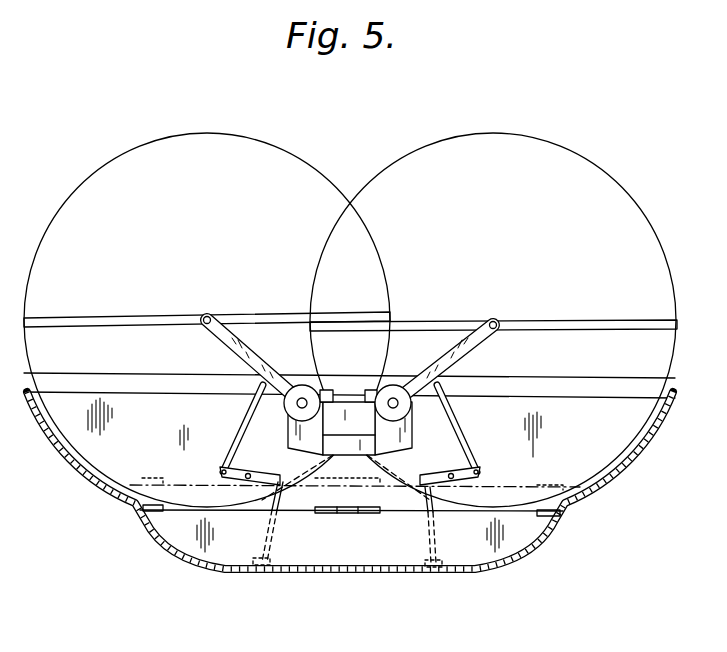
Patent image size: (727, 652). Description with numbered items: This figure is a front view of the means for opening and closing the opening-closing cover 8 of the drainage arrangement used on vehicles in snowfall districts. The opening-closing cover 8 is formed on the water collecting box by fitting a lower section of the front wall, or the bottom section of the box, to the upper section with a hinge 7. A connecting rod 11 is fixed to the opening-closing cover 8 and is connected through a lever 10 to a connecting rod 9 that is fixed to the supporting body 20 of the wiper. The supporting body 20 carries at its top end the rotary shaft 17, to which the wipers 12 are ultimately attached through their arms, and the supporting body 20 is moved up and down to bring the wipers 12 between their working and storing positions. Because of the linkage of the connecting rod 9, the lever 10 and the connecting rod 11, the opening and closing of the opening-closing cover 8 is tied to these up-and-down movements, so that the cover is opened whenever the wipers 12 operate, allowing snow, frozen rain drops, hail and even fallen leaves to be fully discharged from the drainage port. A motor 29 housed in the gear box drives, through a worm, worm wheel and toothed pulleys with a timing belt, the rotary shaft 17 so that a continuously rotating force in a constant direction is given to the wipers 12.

The hinge 7 is at (362, 548).
The opening-closing cover 8 is at (413, 550).
The connecting rod 9 is at (243, 428).
The lever 10 is at (222, 472).
The connecting rod 11 is at (258, 545).
The wiper 12 is at (130, 318).
The rotary shaft 17 is at (207, 316).
The supporting body 20 is at (243, 337).
The motor 29 is at (347, 423).